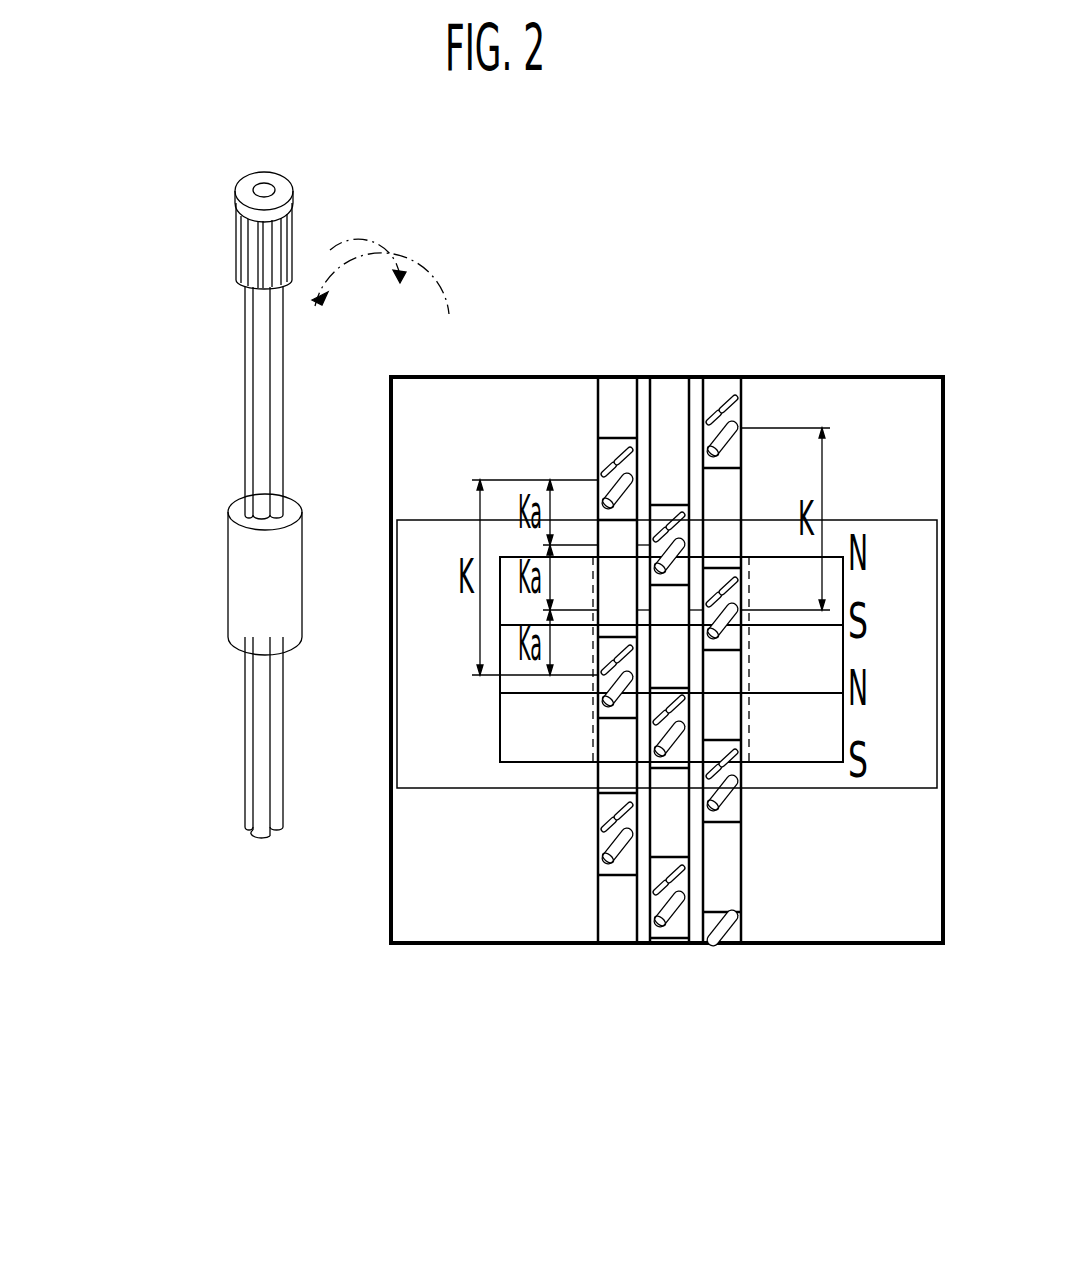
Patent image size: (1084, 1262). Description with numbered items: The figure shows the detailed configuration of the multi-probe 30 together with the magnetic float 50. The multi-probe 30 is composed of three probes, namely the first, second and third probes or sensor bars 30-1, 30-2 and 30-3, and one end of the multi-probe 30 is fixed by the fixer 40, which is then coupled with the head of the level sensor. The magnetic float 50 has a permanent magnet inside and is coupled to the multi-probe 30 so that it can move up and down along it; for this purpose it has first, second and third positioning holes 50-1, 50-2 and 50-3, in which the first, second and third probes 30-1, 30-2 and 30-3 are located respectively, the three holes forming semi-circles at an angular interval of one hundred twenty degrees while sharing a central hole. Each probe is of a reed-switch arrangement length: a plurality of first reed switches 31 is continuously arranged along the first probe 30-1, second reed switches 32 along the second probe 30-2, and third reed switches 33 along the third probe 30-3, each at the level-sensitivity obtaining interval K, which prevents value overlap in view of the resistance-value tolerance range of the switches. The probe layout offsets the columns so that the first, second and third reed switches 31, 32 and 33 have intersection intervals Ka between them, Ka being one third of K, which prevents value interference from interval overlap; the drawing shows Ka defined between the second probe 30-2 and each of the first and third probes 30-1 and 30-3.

The fixer 40 is at (240, 222).
The multi-probe 30 is at (112, 305).
The first probe 30-1 is at (247, 333).
The second probe 30-2 is at (263, 385).
The third probe 30-3 is at (277, 433).
The first reed switch 31 is at (612, 443).
The second reed switch 32 is at (670, 505).
The third reed switch 33 is at (718, 393).
The magnetic float 50 is at (264, 627).
The first positioning hole 50-1 is at (247, 514).
The second positioning hole 50-2 is at (260, 510).
The third positioning hole 50-3 is at (276, 518).